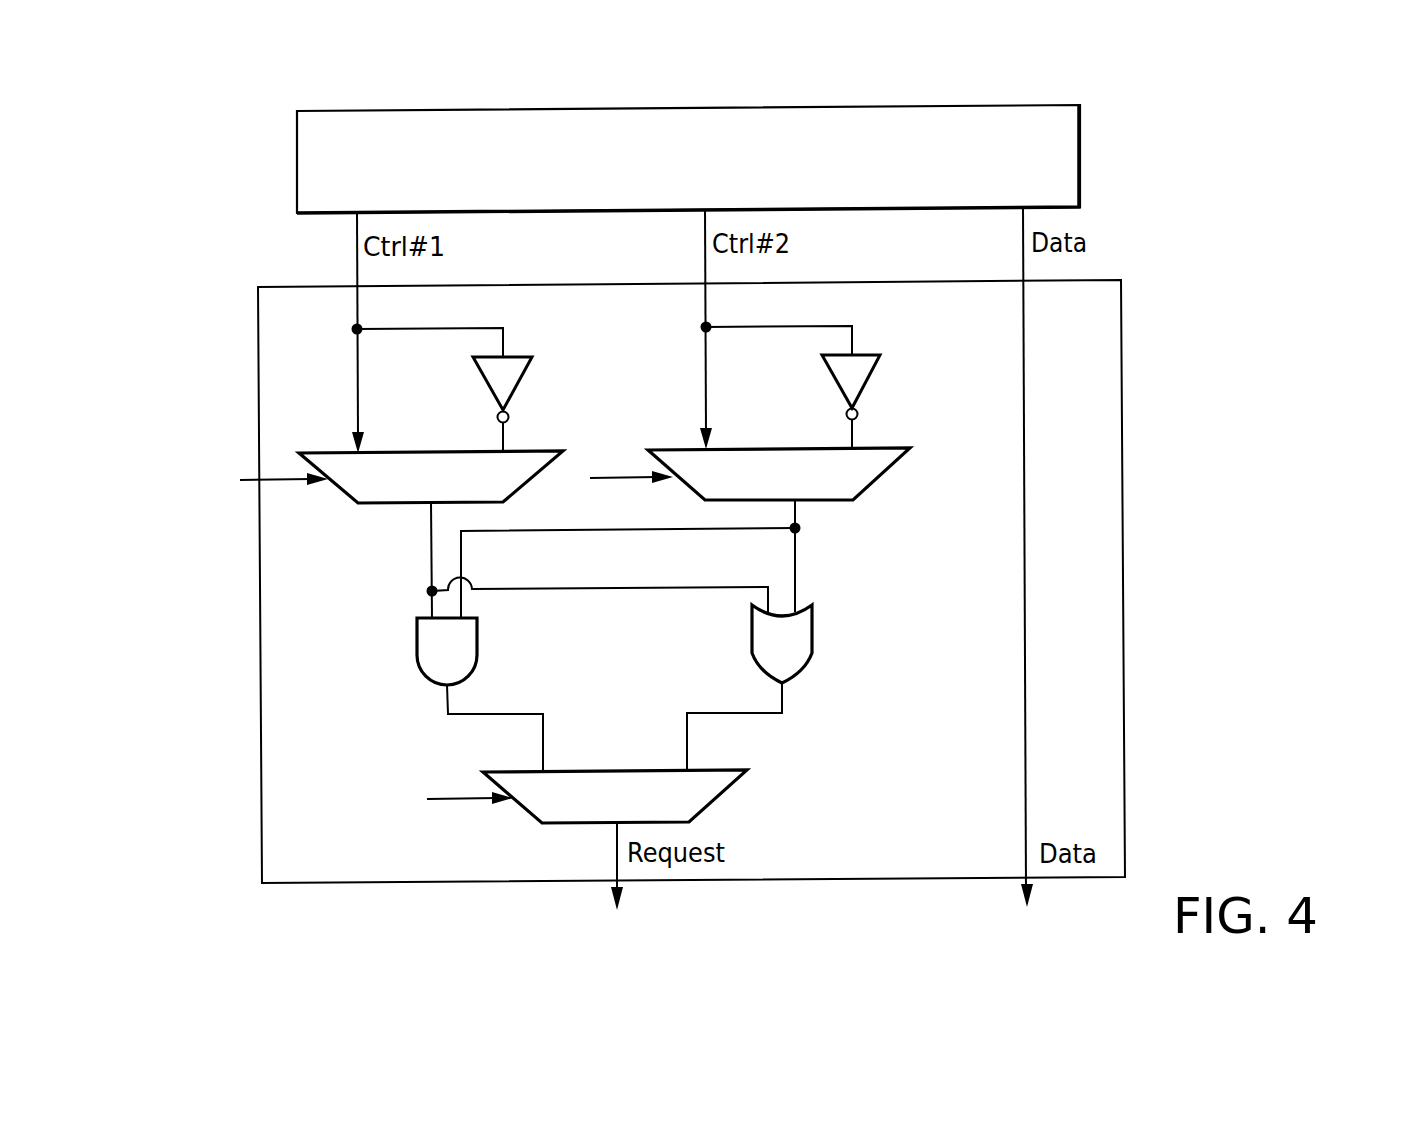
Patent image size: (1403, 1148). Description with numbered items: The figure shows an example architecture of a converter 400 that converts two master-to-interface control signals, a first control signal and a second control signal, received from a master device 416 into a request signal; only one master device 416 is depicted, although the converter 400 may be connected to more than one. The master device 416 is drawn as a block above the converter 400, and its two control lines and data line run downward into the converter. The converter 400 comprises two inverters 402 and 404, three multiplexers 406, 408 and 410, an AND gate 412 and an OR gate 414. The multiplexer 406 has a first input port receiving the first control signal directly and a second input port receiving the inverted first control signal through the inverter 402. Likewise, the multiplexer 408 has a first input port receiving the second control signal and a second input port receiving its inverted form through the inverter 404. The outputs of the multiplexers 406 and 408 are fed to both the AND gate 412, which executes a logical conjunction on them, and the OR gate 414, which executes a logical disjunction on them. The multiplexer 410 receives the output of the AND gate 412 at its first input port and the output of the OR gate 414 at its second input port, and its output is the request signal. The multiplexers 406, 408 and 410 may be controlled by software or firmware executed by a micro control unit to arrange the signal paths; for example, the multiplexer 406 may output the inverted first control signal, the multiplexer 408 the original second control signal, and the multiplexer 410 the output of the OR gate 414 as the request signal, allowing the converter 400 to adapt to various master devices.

The converter 400 is at (1126, 577).
The inverter 402 is at (522, 378).
The inverter 404 is at (872, 378).
The multiplexer 406 is at (318, 452).
The multiplexer 408 is at (893, 470).
The multiplexer 410 is at (724, 795).
The AND gate 412 is at (477, 641).
The OR gate 414 is at (812, 628).
The master device 416 is at (688, 107).